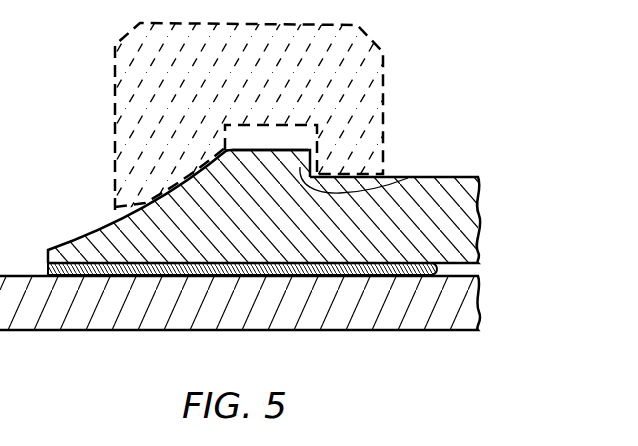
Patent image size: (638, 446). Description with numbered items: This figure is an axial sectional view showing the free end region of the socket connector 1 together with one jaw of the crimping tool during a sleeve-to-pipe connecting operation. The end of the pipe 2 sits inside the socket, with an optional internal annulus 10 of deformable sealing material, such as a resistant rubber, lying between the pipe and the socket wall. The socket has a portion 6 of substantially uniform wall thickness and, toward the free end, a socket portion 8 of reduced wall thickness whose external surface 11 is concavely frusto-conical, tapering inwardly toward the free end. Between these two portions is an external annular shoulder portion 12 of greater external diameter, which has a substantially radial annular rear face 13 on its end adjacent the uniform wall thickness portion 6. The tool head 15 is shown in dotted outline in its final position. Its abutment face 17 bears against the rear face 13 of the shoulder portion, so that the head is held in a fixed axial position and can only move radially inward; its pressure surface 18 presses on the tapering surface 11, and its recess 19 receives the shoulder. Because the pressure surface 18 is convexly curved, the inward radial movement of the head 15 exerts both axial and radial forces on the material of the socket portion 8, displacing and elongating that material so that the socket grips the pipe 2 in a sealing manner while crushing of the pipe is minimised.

The socket connector 1 is at (487, 173).
The pipe 2 is at (383, 313).
The socket portion of substantially uniform wall thickness 6 is at (438, 234).
The socket portion of reduced wall thickness 8 is at (220, 225).
The internal annulus of deformable sealing material 10 is at (113, 278).
The external surface 11 is at (80, 236).
The external annular shoulder portion 12 is at (277, 165).
The annular rear face 13 is at (408, 178).
The tool head 15 is at (398, 73).
The abutment face 17 is at (383, 127).
The pressure surface 18 is at (170, 186).
The recess 19 is at (278, 149).